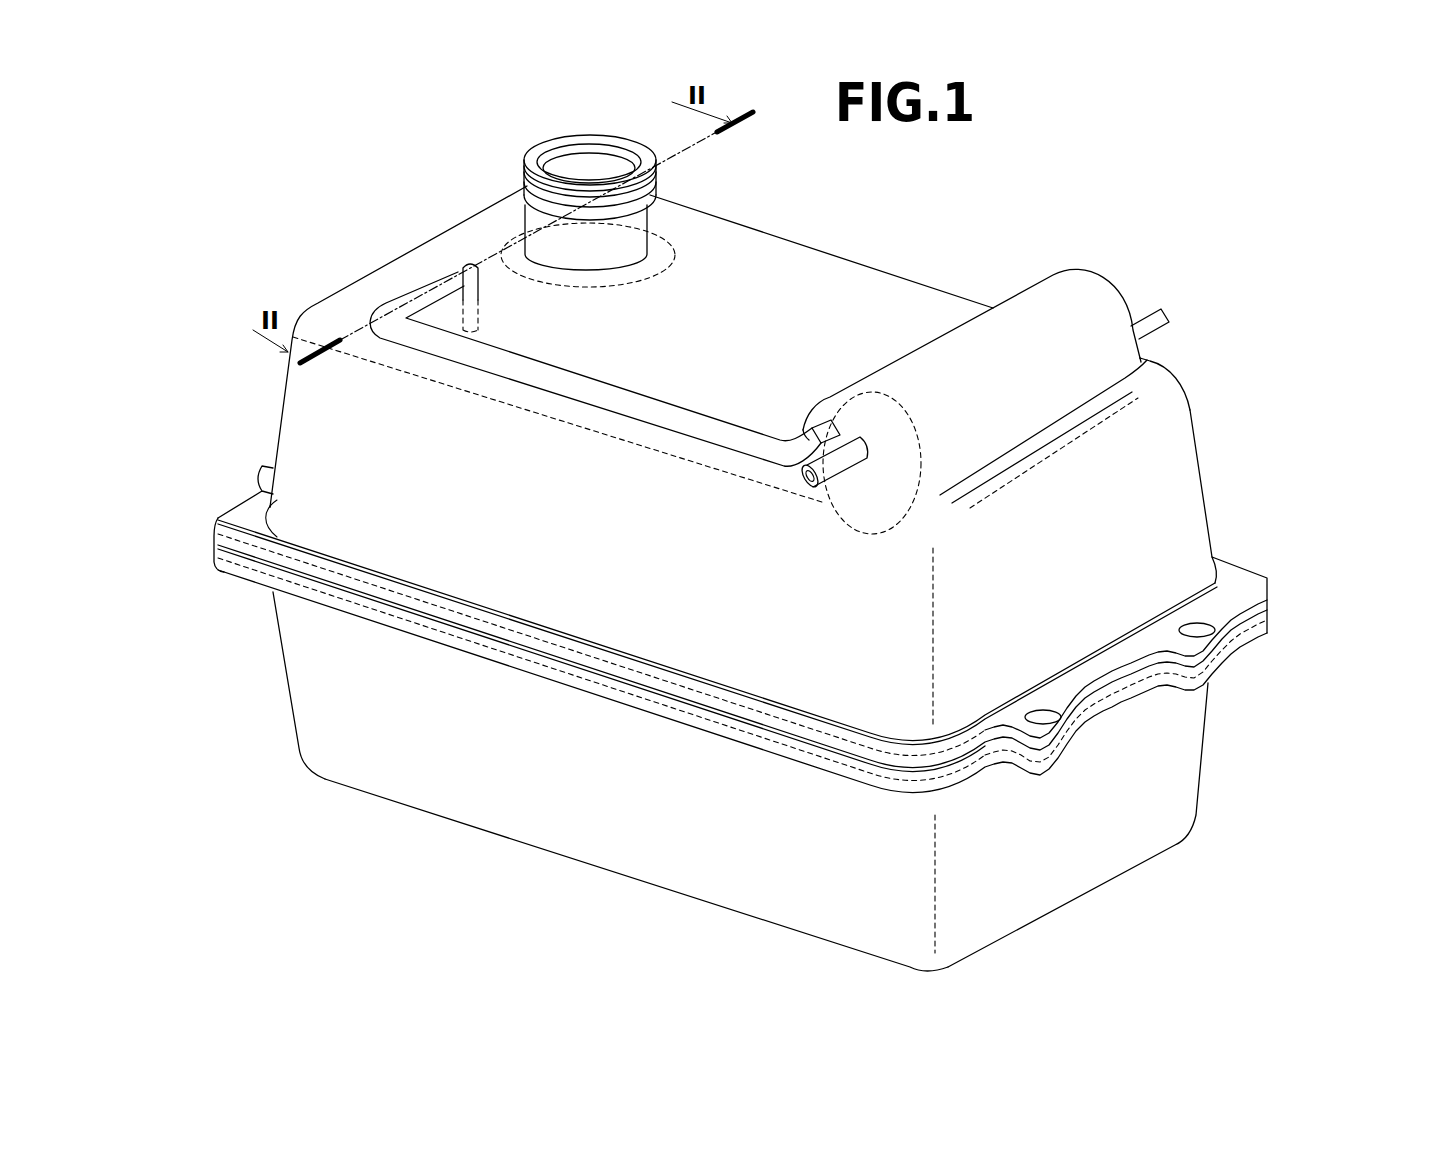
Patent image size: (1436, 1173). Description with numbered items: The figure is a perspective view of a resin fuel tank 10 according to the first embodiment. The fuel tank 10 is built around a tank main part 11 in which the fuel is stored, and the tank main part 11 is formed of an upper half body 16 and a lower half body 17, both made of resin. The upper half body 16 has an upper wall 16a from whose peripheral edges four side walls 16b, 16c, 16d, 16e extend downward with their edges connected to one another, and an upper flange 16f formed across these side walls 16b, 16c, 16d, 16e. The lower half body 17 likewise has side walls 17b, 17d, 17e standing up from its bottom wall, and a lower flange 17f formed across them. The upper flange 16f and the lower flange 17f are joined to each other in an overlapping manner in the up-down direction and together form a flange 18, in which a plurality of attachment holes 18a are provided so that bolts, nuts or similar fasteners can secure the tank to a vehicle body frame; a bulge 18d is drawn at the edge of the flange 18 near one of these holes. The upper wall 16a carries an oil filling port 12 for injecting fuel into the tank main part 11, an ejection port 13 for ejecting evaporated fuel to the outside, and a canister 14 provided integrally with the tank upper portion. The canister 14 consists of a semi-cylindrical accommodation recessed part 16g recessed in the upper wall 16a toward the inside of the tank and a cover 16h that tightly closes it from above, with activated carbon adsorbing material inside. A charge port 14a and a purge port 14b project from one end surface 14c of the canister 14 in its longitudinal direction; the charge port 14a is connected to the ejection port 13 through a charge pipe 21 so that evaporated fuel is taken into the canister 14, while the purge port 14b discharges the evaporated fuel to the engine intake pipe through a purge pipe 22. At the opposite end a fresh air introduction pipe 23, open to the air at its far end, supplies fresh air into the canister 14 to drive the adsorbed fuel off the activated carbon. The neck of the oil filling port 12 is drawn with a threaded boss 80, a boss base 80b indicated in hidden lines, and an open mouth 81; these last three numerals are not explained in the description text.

The fuel tank 10 is at (1075, 197).
The tank main part 11 is at (787, 230).
The oil filling port 12 is at (547, 142).
The ejection port 13 is at (460, 262).
The canister 14 is at (1103, 284).
The charge port 14a is at (877, 433).
The purge port 14b is at (872, 465).
The one end surface 14c is at (823, 403).
The upper half body 16 is at (282, 354).
The upper wall 16a is at (703, 233).
The side wall 16b is at (330, 462).
The side wall 16c is at (1228, 421).
The side wall 16d is at (283, 393).
The side wall 16e is at (1170, 510).
The upper flange 16f is at (1257, 583).
The accommodation recessed part 16g is at (1190, 392).
The cover 16h is at (1142, 345).
The lower half body 17 is at (286, 675).
The side wall 17b is at (513, 800).
The side wall 17d is at (280, 622).
The side wall 17e is at (1123, 820).
The lower flange 17f is at (1263, 623).
The flange 18 is at (1358, 557).
The attachment hole 18a is at (1228, 617).
The mounting ear 18d is at (255, 470).
The charge pipe 21 is at (393, 302).
The purge pipe 22 is at (940, 495).
The fresh air introduction pipe 23 is at (1147, 312).
The inlet boss 80 is at (520, 217).
The boss base 80b is at (468, 247).
The inlet opening 81 is at (577, 153).